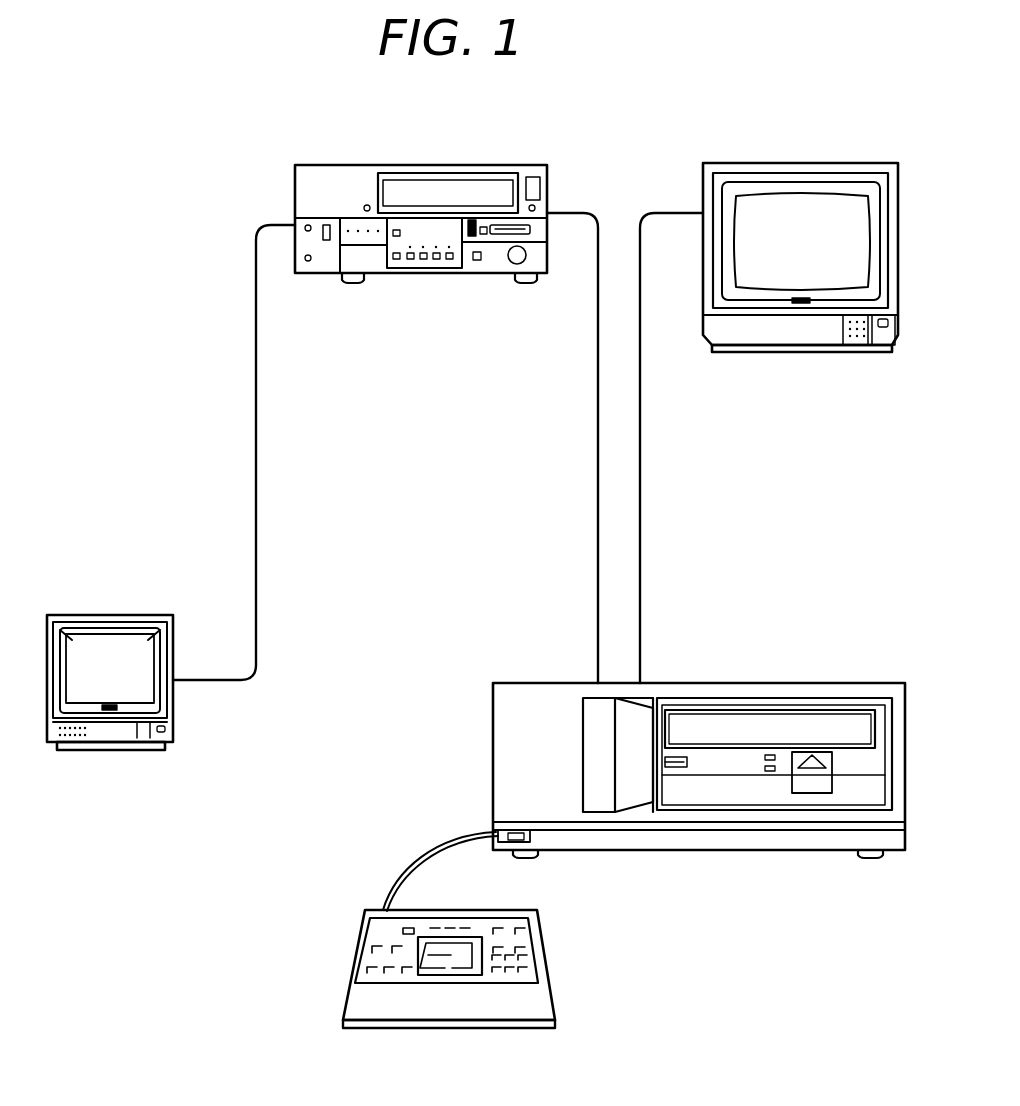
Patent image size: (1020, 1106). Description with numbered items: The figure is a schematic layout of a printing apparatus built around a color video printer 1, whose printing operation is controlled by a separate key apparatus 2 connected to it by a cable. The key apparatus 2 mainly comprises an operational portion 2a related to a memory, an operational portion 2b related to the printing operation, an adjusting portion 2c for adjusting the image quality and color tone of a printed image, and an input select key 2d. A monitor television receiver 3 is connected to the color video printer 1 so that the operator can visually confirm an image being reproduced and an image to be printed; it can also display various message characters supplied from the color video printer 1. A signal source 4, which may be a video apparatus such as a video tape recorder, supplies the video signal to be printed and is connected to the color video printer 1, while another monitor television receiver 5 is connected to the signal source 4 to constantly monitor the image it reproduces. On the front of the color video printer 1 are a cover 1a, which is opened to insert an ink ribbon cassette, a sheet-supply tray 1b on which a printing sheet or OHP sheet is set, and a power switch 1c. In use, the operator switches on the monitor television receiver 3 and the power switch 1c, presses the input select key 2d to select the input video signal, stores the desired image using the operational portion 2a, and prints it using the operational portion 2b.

The color video printer 1 is at (696, 768).
The cover 1a is at (580, 748).
The sheet-supply tray 1b is at (848, 790).
The power switch 1c is at (533, 836).
The key apparatus 2 is at (454, 990).
The operational portion related to a memory 2a is at (378, 948).
The operational portion related to a printing operation 2b is at (452, 976).
The adjusting portion 2c is at (530, 953).
The input select key 2d is at (402, 931).
The monitor television receiver 3 is at (792, 337).
The signal source 4 is at (383, 274).
The monitor television receiver 5 is at (118, 741).